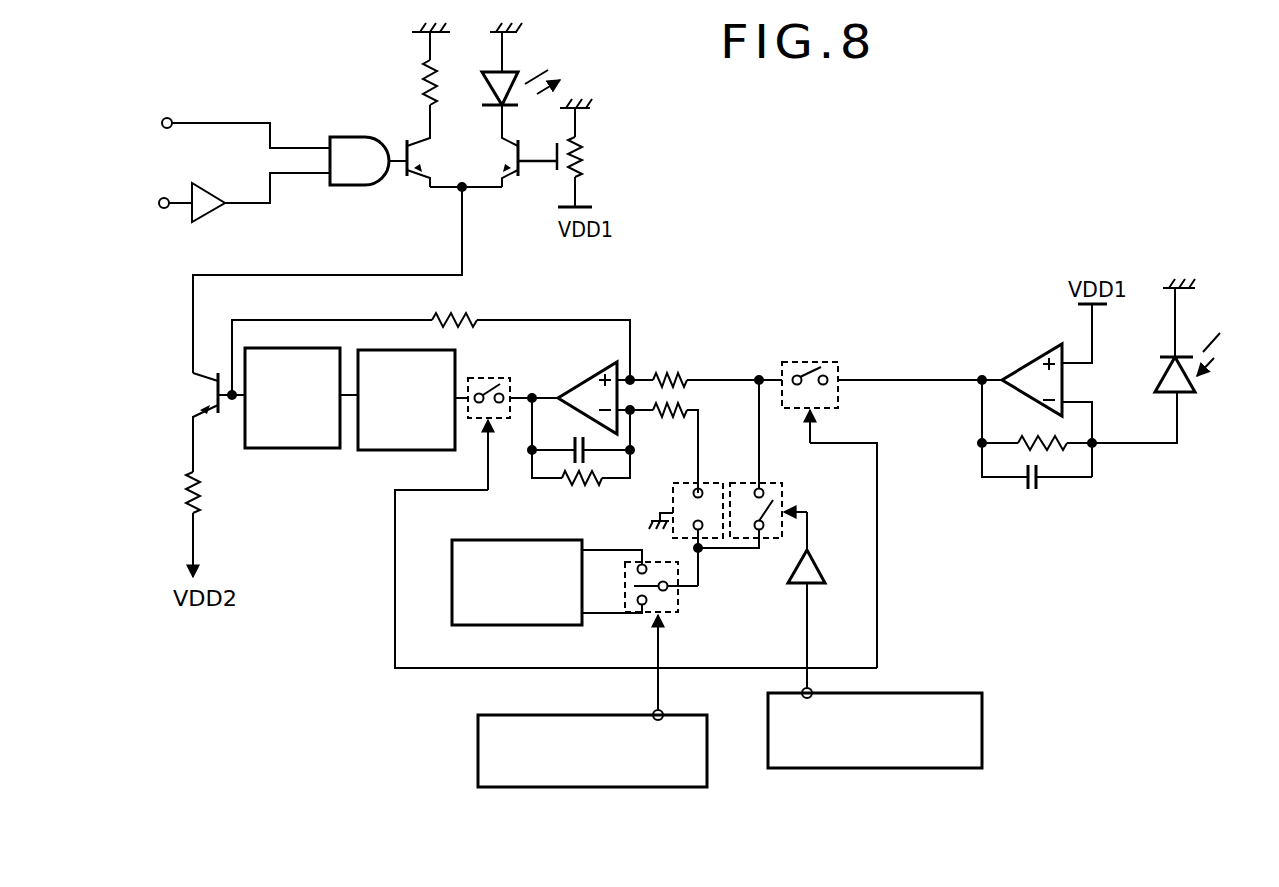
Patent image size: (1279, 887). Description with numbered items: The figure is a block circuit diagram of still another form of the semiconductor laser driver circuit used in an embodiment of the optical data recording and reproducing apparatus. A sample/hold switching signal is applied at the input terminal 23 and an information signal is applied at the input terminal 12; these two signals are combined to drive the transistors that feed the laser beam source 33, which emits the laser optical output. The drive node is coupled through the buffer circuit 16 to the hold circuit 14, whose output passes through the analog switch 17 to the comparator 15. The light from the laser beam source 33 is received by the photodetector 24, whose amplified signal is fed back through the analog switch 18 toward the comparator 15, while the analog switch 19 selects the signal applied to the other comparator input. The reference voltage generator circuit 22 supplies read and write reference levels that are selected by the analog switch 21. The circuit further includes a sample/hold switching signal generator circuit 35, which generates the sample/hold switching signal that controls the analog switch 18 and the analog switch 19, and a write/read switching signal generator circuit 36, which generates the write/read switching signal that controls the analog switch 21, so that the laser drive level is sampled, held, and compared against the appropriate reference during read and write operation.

The input terminal for sample/hold switching signal 23 is at (240, 116).
The input terminal for information signal 12 is at (167, 197).
The laser beam source 33 is at (518, 72).
The buffer circuit 16 is at (273, 448).
The hold circuit 14 is at (455, 362).
The analog switch 17 is at (510, 378).
The comparator 15 is at (617, 366).
The analog switch 18 is at (838, 400).
The analog switch 19 is at (782, 484).
The photodetector 24 is at (1162, 325).
The analog switch 21 is at (678, 604).
The reference voltage generator circuit 22 is at (452, 598).
The write/read switching signal generator circuit 36 is at (478, 737).
The sample/hold switching signal generator circuit 35 is at (948, 693).